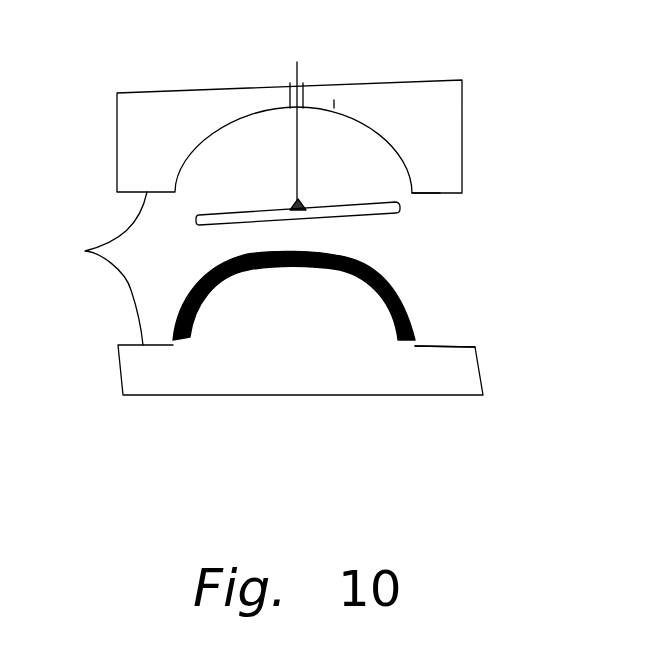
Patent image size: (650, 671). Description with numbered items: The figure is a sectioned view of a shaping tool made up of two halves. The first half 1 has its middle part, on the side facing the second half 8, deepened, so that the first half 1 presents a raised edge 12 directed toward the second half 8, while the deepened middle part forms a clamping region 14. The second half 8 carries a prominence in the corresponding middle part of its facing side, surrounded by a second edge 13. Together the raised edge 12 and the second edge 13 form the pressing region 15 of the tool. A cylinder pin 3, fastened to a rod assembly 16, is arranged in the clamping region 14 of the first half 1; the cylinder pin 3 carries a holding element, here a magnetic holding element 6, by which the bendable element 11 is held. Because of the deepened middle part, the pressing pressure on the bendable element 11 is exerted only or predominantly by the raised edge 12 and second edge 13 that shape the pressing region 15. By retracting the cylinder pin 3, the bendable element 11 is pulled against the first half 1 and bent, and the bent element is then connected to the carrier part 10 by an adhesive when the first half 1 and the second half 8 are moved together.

The first half 1 is at (462, 132).
The cylinder pin 3 is at (298, 163).
The magnetic holding element 6 is at (307, 210).
The second half 8 is at (483, 367).
The carrier part 10 is at (407, 302).
The bendable element 11 is at (405, 215).
The raised edge 12 is at (440, 193).
The second edge 13 is at (447, 346).
The clamping region 14 is at (334, 108).
The pressing region 15 is at (85, 251).
The rod assembly 16 is at (298, 73).